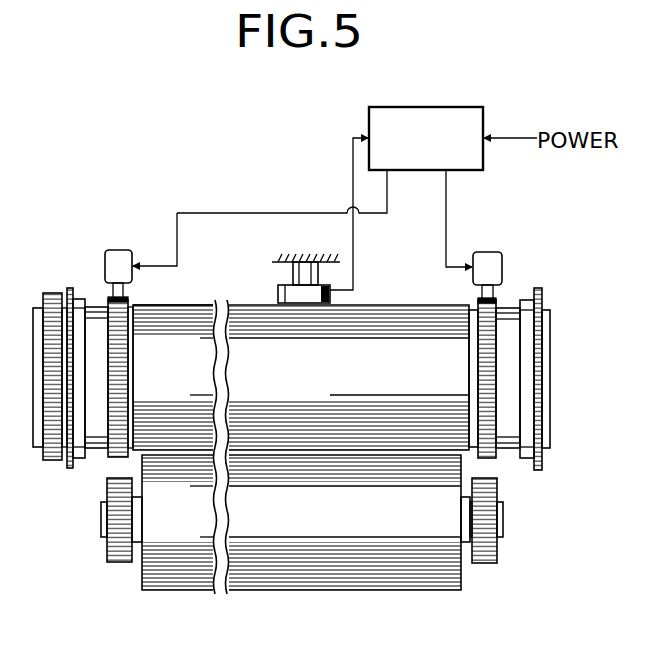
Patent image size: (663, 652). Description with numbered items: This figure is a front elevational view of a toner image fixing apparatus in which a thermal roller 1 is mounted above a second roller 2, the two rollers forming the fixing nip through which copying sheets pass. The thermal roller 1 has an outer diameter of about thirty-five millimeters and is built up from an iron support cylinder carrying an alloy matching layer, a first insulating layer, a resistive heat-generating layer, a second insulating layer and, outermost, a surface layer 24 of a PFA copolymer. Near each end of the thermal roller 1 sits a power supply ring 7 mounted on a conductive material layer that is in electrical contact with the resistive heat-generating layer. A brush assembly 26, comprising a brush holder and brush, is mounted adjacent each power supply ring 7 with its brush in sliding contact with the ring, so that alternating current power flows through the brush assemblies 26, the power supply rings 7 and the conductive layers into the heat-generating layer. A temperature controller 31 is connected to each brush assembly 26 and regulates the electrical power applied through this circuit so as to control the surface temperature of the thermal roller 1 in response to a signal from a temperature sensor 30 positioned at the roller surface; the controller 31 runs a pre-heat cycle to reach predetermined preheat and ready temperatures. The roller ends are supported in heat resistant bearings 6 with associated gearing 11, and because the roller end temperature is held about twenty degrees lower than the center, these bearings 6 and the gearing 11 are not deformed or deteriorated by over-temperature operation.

The thermal roller 1 is at (301, 348).
The lower roller 2 is at (371, 591).
The heat resistant bearings 6 is at (70, 288).
The power supply rings 7 is at (114, 312).
The gearing 11 is at (52, 293).
The surface layer 24 is at (175, 304).
The brush assemblies 26 is at (125, 250).
The temperature sensor 30 is at (277, 294).
The temperature controller 31 is at (403, 107).